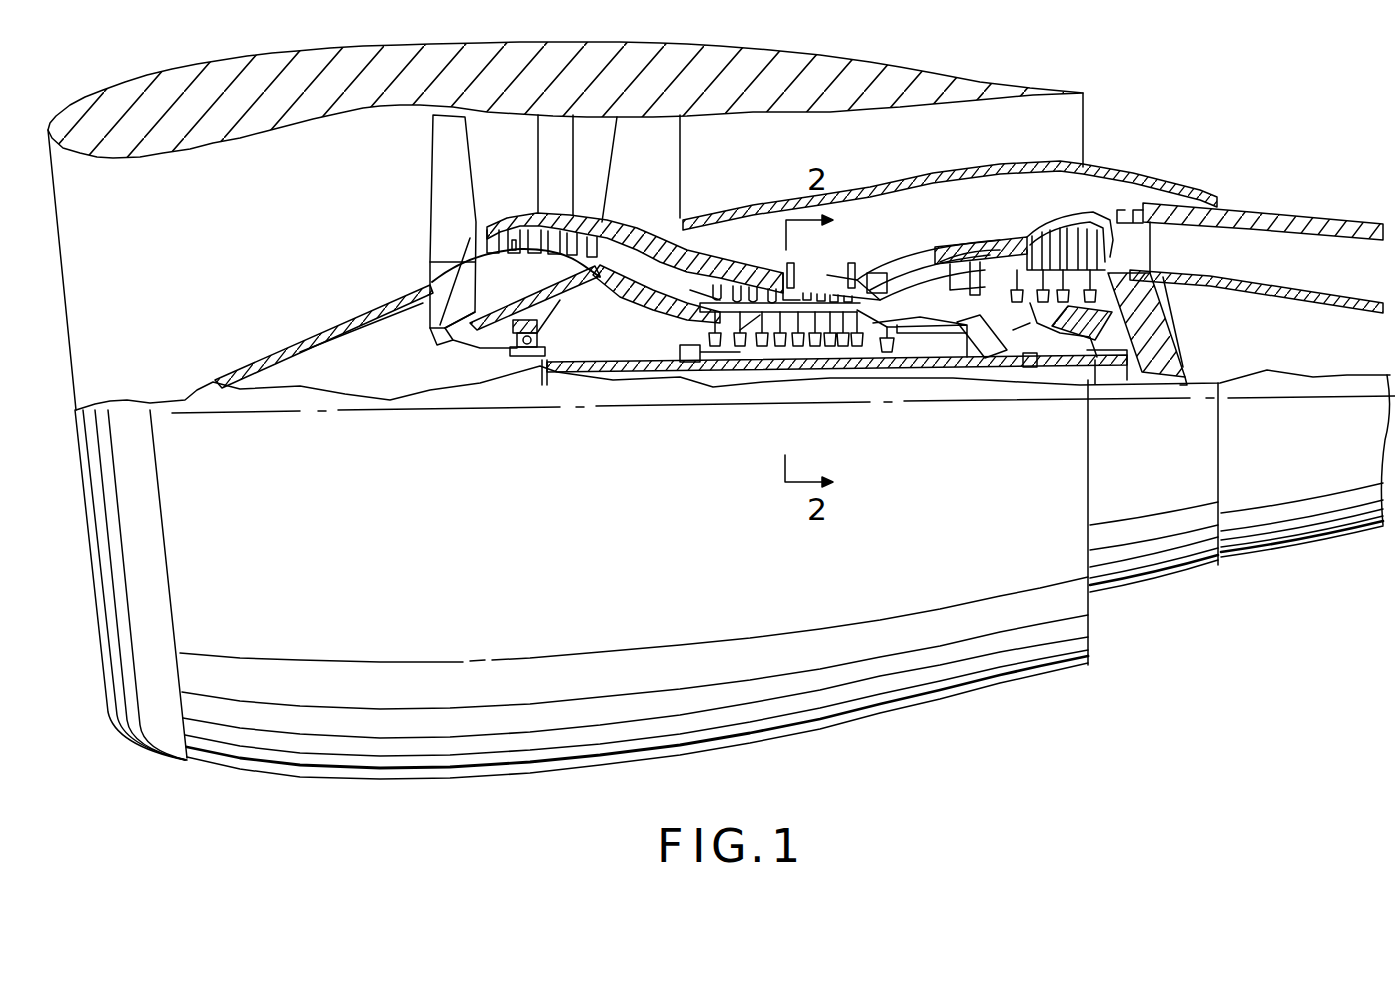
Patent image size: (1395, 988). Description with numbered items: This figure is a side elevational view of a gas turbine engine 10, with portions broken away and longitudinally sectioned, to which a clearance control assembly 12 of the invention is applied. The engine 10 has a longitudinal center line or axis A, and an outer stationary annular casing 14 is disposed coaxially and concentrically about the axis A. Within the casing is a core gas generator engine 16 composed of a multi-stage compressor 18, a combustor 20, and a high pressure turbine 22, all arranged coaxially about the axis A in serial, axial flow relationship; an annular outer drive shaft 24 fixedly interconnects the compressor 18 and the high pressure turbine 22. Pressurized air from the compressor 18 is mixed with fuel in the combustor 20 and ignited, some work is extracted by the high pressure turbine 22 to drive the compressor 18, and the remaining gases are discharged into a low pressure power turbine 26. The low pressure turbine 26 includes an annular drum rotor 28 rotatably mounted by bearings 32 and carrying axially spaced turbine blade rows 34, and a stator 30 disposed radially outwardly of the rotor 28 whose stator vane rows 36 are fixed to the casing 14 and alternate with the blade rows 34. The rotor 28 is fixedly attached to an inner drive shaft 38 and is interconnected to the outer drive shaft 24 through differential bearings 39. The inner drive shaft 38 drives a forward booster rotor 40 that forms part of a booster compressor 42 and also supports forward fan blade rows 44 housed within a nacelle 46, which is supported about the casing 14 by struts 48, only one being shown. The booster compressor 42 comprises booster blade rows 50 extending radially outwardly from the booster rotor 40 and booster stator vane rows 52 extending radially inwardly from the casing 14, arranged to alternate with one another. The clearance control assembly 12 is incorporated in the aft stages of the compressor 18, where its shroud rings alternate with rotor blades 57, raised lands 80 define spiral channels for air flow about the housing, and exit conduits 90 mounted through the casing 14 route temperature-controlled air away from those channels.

The gas turbine engine 10 is at (1183, 119).
The clearance control assembly 12 is at (833, 265).
The outer stationary annular casing 14 is at (918, 254).
The core gas generator engine 16 is at (763, 238).
The multi-stage compressor 18 is at (780, 348).
The combustor 20 is at (928, 254).
The high pressure turbine 22 is at (992, 241).
The annular outer drive shaft 24 is at (940, 335).
The low pressure power turbine 26 is at (1065, 209).
The annular drum rotor 28 is at (1164, 334).
The stator 30 is at (1080, 200).
The bearings 32 is at (1100, 383).
The turbine blade rows 34 is at (1063, 257).
The stator vane rows 36 is at (1047, 250).
The inner drive shaft 38 is at (837, 373).
The differential bearings 39 is at (683, 358).
The forward booster rotor 40 is at (458, 333).
The booster compressor 42 is at (480, 228).
The forward fan blade rows 44 is at (463, 217).
The nacelle 46 is at (770, 50).
The struts 48 is at (657, 156).
The booster blade rows 50 is at (532, 258).
The booster stator vane rows 52 is at (592, 230).
The rotor blades 57 is at (825, 288).
The raised lands 80 is at (850, 263).
The exit conduits 90 is at (787, 263).
The longitudinal center line or axis A is at (275, 412).